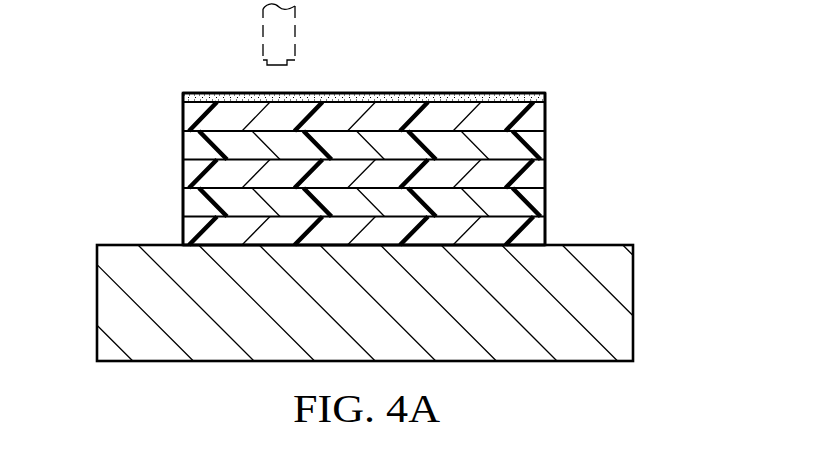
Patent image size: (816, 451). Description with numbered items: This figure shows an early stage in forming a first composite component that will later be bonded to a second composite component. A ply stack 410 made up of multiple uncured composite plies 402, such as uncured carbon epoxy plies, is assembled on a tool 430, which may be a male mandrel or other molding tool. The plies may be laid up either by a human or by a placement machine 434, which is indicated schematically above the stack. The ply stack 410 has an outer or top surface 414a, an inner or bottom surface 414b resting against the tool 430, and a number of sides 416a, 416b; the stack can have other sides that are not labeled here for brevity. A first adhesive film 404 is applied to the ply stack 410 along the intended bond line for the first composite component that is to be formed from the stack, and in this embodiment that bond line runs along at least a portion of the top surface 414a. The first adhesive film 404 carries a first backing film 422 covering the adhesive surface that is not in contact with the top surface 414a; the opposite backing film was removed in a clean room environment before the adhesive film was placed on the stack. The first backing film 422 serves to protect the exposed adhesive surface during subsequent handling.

The uncured composite plies 402 is at (192, 147).
The first adhesive film 404 is at (405, 98).
The ply stack 410 is at (86, 101).
The outer (top) surface 414a is at (498, 97).
The inner (bottom) surface 414b is at (229, 245).
The side 416a is at (182, 110).
The side 416b is at (547, 152).
The first backing film 422 is at (182, 95).
The tool 430 is at (623, 335).
The placement machine 434 is at (270, 32).